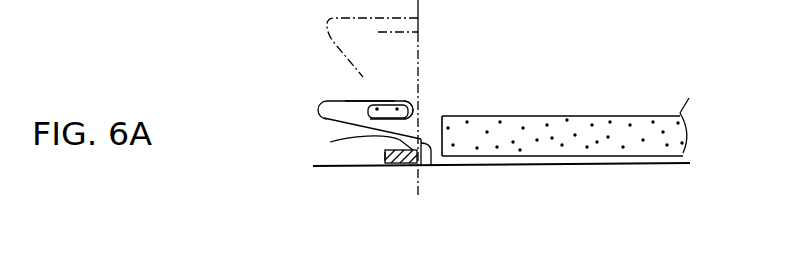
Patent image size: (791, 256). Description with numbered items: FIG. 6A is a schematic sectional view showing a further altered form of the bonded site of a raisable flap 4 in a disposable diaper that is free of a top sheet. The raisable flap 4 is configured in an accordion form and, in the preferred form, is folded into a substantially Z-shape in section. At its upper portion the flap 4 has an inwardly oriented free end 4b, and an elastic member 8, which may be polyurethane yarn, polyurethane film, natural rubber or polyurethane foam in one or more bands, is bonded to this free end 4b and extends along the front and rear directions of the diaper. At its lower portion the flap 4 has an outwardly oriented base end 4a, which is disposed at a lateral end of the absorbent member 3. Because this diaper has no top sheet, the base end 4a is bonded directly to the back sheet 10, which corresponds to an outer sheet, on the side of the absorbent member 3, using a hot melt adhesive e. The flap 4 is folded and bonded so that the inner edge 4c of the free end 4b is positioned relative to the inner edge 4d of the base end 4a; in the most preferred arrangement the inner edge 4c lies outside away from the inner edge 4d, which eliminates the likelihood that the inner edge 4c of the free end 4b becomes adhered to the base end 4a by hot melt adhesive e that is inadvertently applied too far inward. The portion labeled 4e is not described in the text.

The absorbent member 3 is at (668, 145).
The raisable flap 4 is at (318, 110).
The base end 4a is at (330, 142).
The free end 4b is at (372, 100).
The inner edge of the free end 4c is at (419, 110).
The inner edge of the base end 4d is at (430, 166).
The contact portion of contact spring 4e is at (413, 164).
The elastic member 8 is at (398, 95).
The back sheet 10 is at (546, 168).
The hot melt adhesive e is at (383, 152).